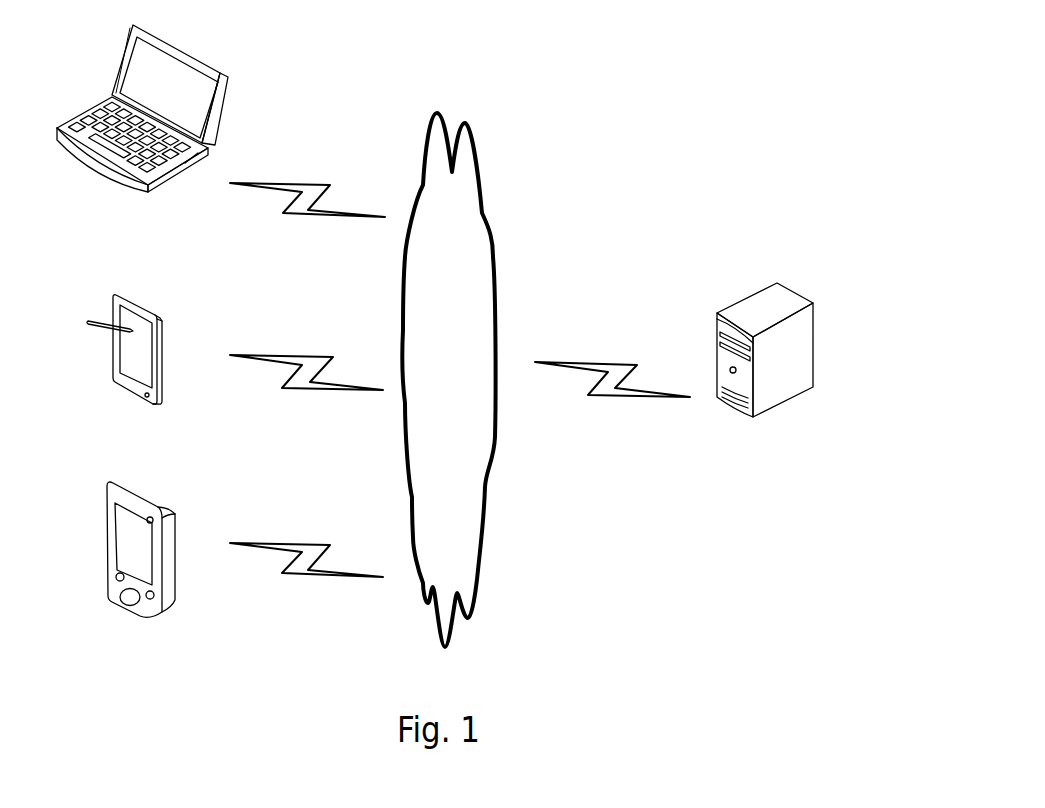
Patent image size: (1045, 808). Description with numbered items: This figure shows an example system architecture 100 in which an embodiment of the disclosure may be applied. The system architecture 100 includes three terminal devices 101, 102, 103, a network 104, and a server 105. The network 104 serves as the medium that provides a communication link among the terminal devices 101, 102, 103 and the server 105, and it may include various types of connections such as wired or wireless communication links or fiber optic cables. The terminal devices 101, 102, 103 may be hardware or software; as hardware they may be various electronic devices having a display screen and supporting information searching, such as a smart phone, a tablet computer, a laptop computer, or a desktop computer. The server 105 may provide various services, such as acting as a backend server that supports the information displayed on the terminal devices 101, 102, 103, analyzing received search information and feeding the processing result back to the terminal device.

The system architecture 100 is at (718, 13).
The terminal device 101 is at (141, 570).
The terminal device 102 is at (124, 372).
The terminal device 103 is at (142, 130).
The network 104 is at (448, 380).
The server 105 is at (765, 375).